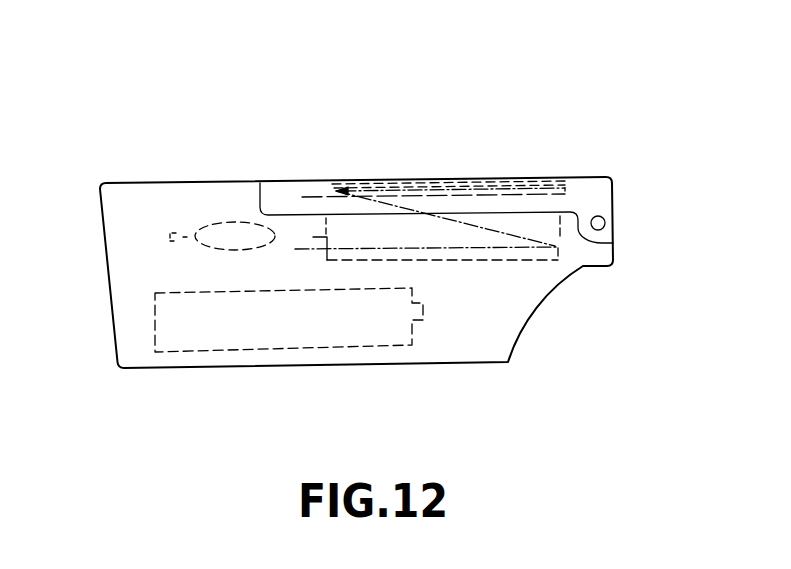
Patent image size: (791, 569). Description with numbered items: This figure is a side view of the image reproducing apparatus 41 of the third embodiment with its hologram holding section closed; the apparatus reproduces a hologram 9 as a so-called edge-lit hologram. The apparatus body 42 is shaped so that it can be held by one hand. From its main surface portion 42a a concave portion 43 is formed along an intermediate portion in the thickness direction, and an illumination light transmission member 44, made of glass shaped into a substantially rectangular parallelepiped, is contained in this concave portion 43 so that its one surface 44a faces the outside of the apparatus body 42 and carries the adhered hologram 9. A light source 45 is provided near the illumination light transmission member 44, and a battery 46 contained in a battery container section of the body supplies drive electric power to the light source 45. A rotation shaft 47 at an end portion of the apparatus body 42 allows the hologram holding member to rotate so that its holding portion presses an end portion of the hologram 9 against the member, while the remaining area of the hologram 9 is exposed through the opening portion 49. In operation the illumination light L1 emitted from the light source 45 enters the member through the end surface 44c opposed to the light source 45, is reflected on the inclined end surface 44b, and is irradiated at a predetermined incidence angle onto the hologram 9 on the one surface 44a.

The image reproducing apparatus 41 is at (168, 91).
The apparatus body 42 is at (502, 328).
The main surface portion 42a is at (283, 213).
The concave portion 43 is at (330, 260).
The illumination light transmission member 44 is at (552, 200).
The one surface 44a is at (548, 181).
The end surface 44b is at (560, 240).
The end surface 44c is at (325, 238).
The light source 45 is at (210, 222).
The battery 46 is at (373, 347).
The rotation shaft 47 is at (605, 223).
The opening portion 49 is at (353, 183).
The hologram 9 is at (496, 181).
The illumination light L1 is at (448, 194).